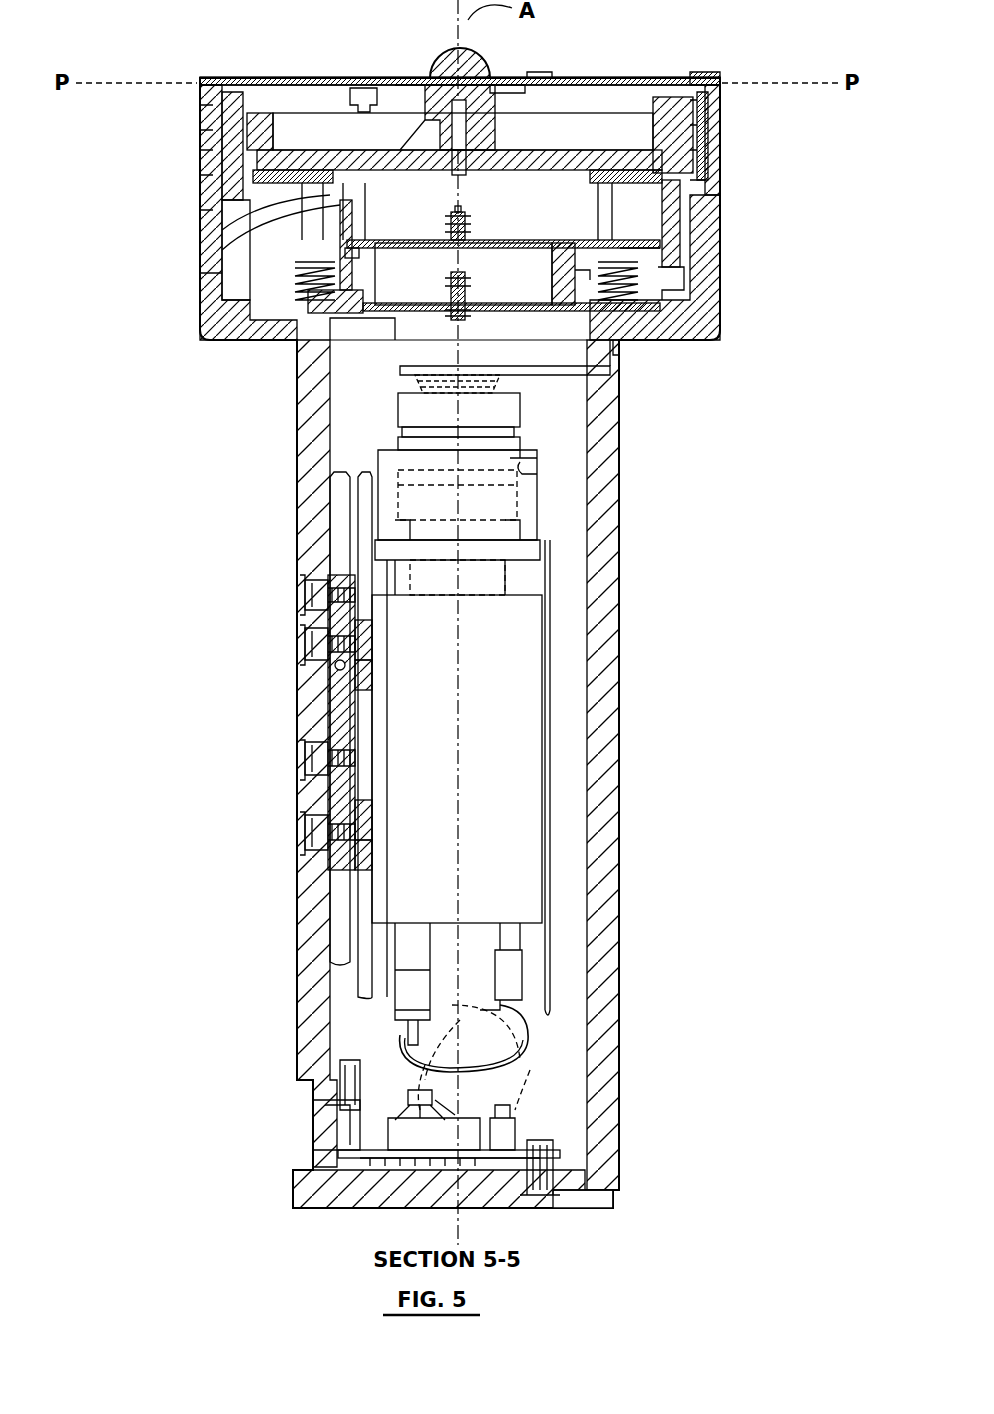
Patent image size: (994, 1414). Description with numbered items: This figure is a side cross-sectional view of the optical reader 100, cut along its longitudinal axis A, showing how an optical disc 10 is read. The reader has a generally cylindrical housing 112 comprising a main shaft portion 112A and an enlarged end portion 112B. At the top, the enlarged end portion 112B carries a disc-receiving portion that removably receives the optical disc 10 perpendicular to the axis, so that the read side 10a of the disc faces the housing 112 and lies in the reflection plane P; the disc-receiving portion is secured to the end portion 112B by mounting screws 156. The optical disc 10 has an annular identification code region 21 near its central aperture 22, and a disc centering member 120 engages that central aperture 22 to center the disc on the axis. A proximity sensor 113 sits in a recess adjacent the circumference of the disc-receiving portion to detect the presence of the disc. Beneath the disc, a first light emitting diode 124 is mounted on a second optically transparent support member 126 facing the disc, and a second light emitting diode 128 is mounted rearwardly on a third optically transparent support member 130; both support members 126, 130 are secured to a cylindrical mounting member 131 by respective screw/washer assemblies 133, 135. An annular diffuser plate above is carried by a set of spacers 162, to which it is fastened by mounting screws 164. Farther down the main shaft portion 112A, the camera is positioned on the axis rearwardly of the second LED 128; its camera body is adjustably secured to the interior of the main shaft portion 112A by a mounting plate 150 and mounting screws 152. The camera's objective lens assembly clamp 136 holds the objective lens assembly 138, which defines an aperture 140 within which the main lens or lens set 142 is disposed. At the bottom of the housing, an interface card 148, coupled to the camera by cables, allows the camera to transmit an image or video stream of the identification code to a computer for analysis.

The optical disc 10 is at (606, 78).
The read side 10a is at (720, 112).
The annular identification code region 21 is at (548, 77).
The central aperture 22 is at (520, 76).
The optical reader 100 is at (146, 137).
The housing 112 is at (655, 385).
The main shaft portion 112A is at (617, 580).
The enlarged end portion 112B is at (705, 262).
The proximity sensor 113 is at (203, 157).
The disc centering member 120 is at (432, 64).
The first light emitting diode 124 is at (472, 214).
The second optically transparent support member 126 is at (535, 241).
The second light emitting diode 128 is at (468, 265).
The third optically transparent support member 130 is at (527, 309).
The cylindrical mounting member 131 is at (552, 280).
The screw/washer assembly 133 is at (350, 228).
The screw/washer assembly 135 is at (350, 310).
The objective lens assembly clamp 136 is at (528, 503).
The objective lens assembly 138 is at (512, 413).
The aperture 140 is at (405, 372).
The main lens or lens set 142 is at (441, 366).
The interface card 148 is at (467, 1147).
The mounting plate 150 is at (300, 718).
The mounting screws 152 is at (300, 645).
The mounting screws 156 is at (712, 138).
The spacers 162 is at (700, 240).
The mounting screws 164 is at (700, 200).